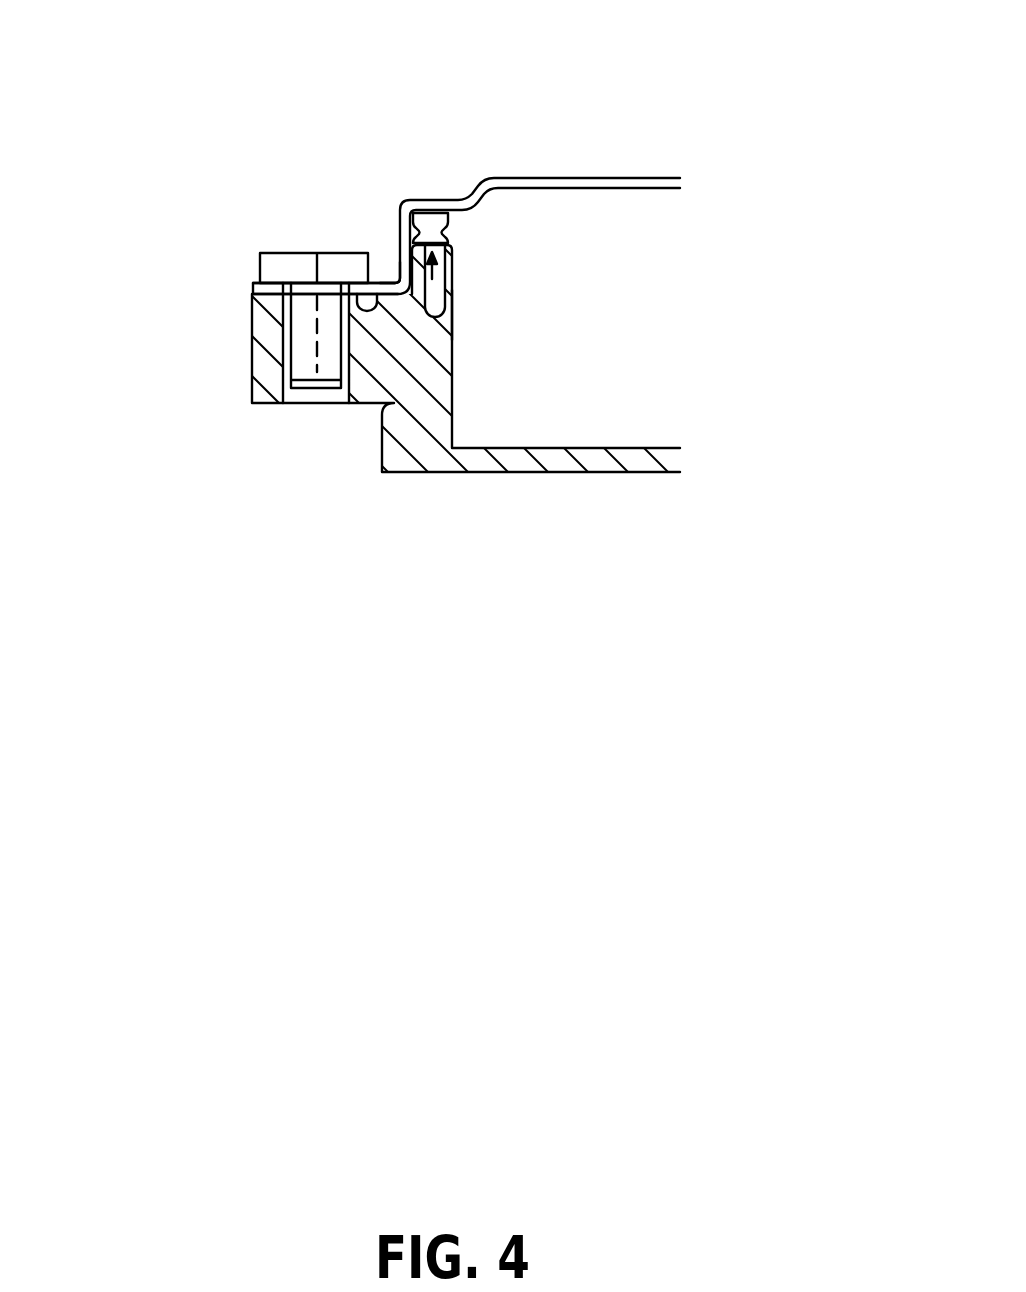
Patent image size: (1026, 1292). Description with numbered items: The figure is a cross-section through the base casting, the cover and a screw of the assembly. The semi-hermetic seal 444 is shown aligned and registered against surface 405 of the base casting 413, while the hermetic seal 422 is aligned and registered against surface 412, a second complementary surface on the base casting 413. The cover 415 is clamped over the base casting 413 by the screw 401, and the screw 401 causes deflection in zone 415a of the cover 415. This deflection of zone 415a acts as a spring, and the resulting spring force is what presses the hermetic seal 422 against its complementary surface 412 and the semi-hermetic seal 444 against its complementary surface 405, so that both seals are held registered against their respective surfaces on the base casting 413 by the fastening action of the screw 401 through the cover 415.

The screw 401 is at (293, 253).
The surface 412 is at (389, 278).
The semi-hermetic seal 444 is at (430, 212).
The cover 415 is at (595, 190).
The zone 415a is at (380, 313).
The surface 405 is at (452, 315).
The hermetic seal 422 is at (452, 380).
The base casting 413 is at (392, 432).